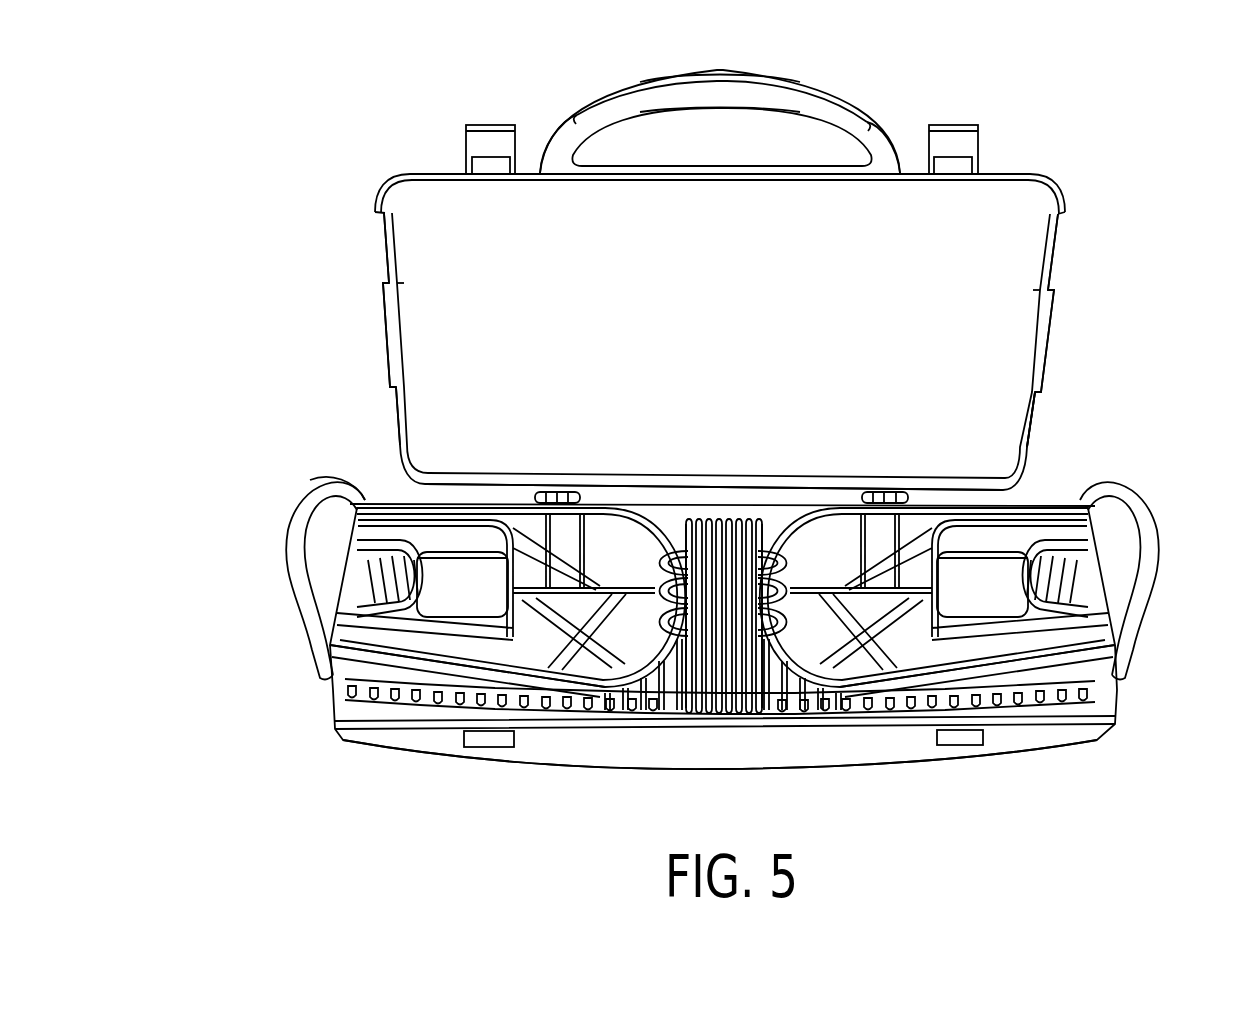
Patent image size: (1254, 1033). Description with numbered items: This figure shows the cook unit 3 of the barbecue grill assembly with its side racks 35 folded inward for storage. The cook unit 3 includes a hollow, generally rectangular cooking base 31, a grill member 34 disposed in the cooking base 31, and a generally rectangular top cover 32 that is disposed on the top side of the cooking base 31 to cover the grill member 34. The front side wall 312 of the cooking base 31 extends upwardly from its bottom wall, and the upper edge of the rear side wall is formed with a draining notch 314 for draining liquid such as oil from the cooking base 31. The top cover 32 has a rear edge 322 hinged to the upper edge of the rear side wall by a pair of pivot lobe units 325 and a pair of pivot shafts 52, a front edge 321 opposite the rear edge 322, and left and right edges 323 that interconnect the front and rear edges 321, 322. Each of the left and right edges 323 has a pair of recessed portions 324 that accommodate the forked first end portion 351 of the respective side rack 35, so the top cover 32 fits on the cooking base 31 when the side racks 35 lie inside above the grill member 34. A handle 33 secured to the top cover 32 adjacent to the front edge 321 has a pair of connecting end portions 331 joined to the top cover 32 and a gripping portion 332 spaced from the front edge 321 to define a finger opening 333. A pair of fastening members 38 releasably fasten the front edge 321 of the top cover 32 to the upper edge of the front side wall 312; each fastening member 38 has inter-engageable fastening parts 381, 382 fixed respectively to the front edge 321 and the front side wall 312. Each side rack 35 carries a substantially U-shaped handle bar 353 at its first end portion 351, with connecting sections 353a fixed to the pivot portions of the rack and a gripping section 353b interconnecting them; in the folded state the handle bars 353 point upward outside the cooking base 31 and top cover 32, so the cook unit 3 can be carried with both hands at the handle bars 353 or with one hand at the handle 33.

The cook unit 3 is at (1070, 754).
The cooking base 31 is at (785, 768).
The front side wall 312 is at (832, 750).
The draining notch 314 is at (717, 510).
The top cover 32 is at (1080, 171).
The front edge 321 is at (447, 173).
The rear edge 322 is at (770, 477).
The left and right edges 323 is at (383, 322).
The recessed portions 324 is at (380, 230).
The pivot lobe units 325 is at (897, 497).
The handle 33 is at (810, 85).
The connecting end portions 331 is at (556, 158).
The gripping portion 332 is at (738, 97).
The finger opening 333 is at (713, 130).
The grill member 34 is at (885, 705).
The side racks 35 is at (605, 695).
The first end portion 351 is at (358, 690).
The handle bar 353 is at (293, 520).
The connecting sections 353a is at (380, 500).
The gripping section 353b is at (310, 507).
The fastening members 38 is at (480, 112).
The fastening part 381 is at (503, 142).
The fastening part 382 is at (485, 747).
The pivot shafts 52 is at (542, 495).